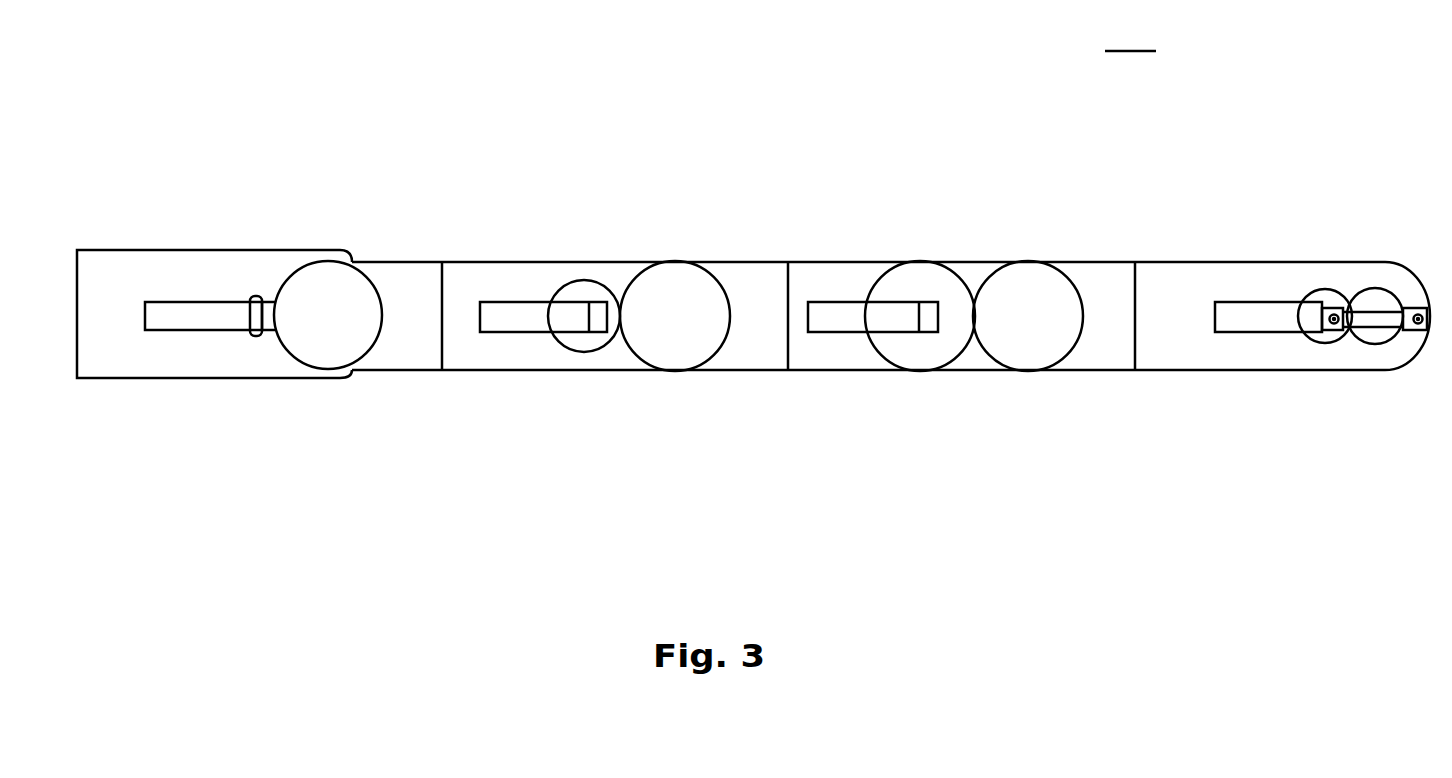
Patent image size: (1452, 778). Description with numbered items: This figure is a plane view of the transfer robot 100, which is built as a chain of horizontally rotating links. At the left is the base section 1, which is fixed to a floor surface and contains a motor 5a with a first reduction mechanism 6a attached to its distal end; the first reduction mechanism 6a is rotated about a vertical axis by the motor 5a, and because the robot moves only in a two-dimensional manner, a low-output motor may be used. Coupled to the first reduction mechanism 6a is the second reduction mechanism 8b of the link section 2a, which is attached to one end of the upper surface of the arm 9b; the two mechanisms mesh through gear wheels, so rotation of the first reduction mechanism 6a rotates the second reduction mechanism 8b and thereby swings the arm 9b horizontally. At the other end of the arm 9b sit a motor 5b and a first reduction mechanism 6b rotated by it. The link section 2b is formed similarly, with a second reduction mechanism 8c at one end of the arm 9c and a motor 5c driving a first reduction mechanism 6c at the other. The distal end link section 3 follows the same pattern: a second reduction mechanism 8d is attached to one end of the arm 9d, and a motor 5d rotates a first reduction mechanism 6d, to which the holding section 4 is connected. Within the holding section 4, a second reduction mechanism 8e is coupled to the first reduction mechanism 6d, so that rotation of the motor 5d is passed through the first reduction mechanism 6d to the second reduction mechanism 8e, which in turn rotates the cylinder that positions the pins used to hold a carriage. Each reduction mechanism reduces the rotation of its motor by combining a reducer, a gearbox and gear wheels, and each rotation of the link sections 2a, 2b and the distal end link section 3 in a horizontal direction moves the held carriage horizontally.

The transfer robot 100 is at (1130, 32).
The base section 1 is at (229, 289).
The link section 2a is at (570, 289).
The link section 2b is at (948, 292).
The distal end link section 3 is at (1282, 294).
The holding section 4 is at (1374, 368).
The motor 5a is at (217, 315).
The motor 5b is at (545, 315).
The motor 5c is at (892, 315).
The motor 5d is at (1270, 315).
The first reduction mechanism 6a is at (255, 334).
The first reduction mechanism 6b is at (580, 343).
The first reduction mechanism 6c is at (920, 355).
The first reduction mechanism 6d is at (1325, 345).
The second reduction mechanism 8b is at (318, 352).
The second reduction mechanism 8c is at (668, 352).
The second reduction mechanism 8d is at (1030, 355).
The second reduction mechanism 8e is at (1383, 305).
The arm 9b is at (473, 353).
The arm 9c is at (817, 358).
The arm 9d is at (1333, 278).